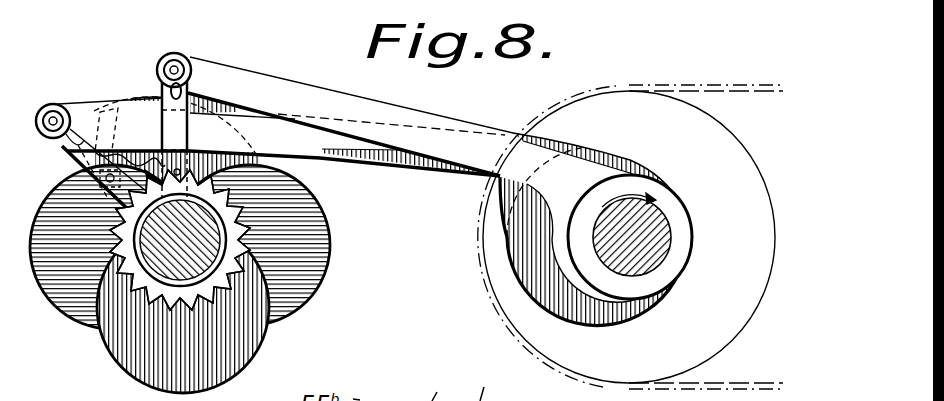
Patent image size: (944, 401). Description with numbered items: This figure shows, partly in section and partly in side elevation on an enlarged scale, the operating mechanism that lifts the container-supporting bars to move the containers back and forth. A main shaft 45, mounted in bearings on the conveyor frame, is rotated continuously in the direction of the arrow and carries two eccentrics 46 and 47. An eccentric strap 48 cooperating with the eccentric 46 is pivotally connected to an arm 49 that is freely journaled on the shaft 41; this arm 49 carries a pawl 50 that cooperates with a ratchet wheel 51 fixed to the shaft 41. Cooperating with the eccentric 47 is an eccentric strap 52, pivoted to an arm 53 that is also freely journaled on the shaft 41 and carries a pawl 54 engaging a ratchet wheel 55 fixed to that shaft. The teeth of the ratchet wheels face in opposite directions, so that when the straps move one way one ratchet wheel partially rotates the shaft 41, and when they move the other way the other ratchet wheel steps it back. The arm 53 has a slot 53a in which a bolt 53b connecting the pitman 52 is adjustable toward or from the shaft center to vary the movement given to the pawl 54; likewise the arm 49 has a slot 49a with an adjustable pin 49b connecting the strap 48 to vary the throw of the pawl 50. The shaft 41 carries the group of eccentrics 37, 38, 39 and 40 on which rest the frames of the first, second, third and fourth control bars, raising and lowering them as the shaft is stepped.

The operating eccentric 37 is at (148, 97).
The eccentric 38 is at (322, 207).
The eccentric 39 is at (222, 358).
The eccentric 40 is at (80, 308).
The shaft 41 is at (205, 241).
The main shaft 45 is at (660, 227).
The eccentric 46 is at (535, 263).
The eccentric 47 is at (597, 277).
The eccentric strap 48 is at (293, 133).
The arm 49 is at (88, 173).
The slot 49a is at (50, 104).
The pin 49b is at (47, 108).
The pawl 50 is at (118, 152).
The ratchet wheel 51 is at (330, 271).
The eccentric strap 52 is at (423, 97).
The arm 53 is at (189, 132).
The slot 53a is at (182, 83).
The bolt 53b is at (197, 40).
The pawl 54 is at (158, 150).
The ratchet wheel 55 is at (232, 291).